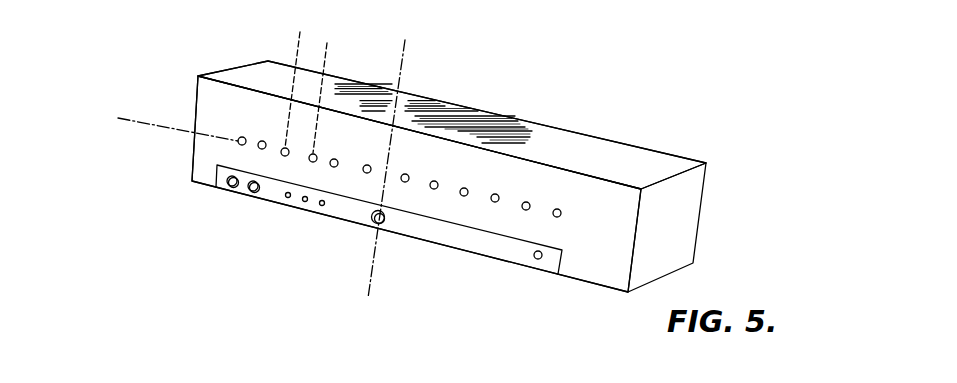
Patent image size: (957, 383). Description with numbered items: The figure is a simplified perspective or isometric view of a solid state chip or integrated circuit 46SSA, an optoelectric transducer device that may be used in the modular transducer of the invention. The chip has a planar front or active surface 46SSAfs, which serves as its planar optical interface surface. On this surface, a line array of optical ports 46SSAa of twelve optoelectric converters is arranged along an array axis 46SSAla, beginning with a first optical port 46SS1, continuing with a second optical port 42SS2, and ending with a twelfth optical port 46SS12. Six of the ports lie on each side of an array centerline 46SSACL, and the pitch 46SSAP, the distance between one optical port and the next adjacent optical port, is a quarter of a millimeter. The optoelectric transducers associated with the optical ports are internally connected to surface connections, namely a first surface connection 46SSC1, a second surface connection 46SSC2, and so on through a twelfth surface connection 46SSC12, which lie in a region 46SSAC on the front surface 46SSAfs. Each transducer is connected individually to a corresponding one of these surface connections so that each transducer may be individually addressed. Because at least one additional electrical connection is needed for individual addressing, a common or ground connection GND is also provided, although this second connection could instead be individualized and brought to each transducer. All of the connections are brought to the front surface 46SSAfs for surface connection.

The solid state chip 46SSA is at (690, 203).
The front surface 46SSAfs is at (561, 211).
The line array of optical ports 46SSAa is at (473, 168).
The region 46SSAC is at (500, 244).
The array centerline 46SSACL is at (405, 77).
The sensor pitch 46SSAP is at (336, 49).
The array axis 46SSAla is at (143, 117).
The optical port 46SS1 is at (238, 141).
The second sensor 42SS2 is at (259, 141).
The optical port 46SS12 is at (625, 207).
The surface connection 46SSC1 is at (232, 190).
The surface connection 46SSC2 is at (254, 194).
The common or ground connection GND is at (376, 221).
The surface connection 46SSC12 is at (536, 260).